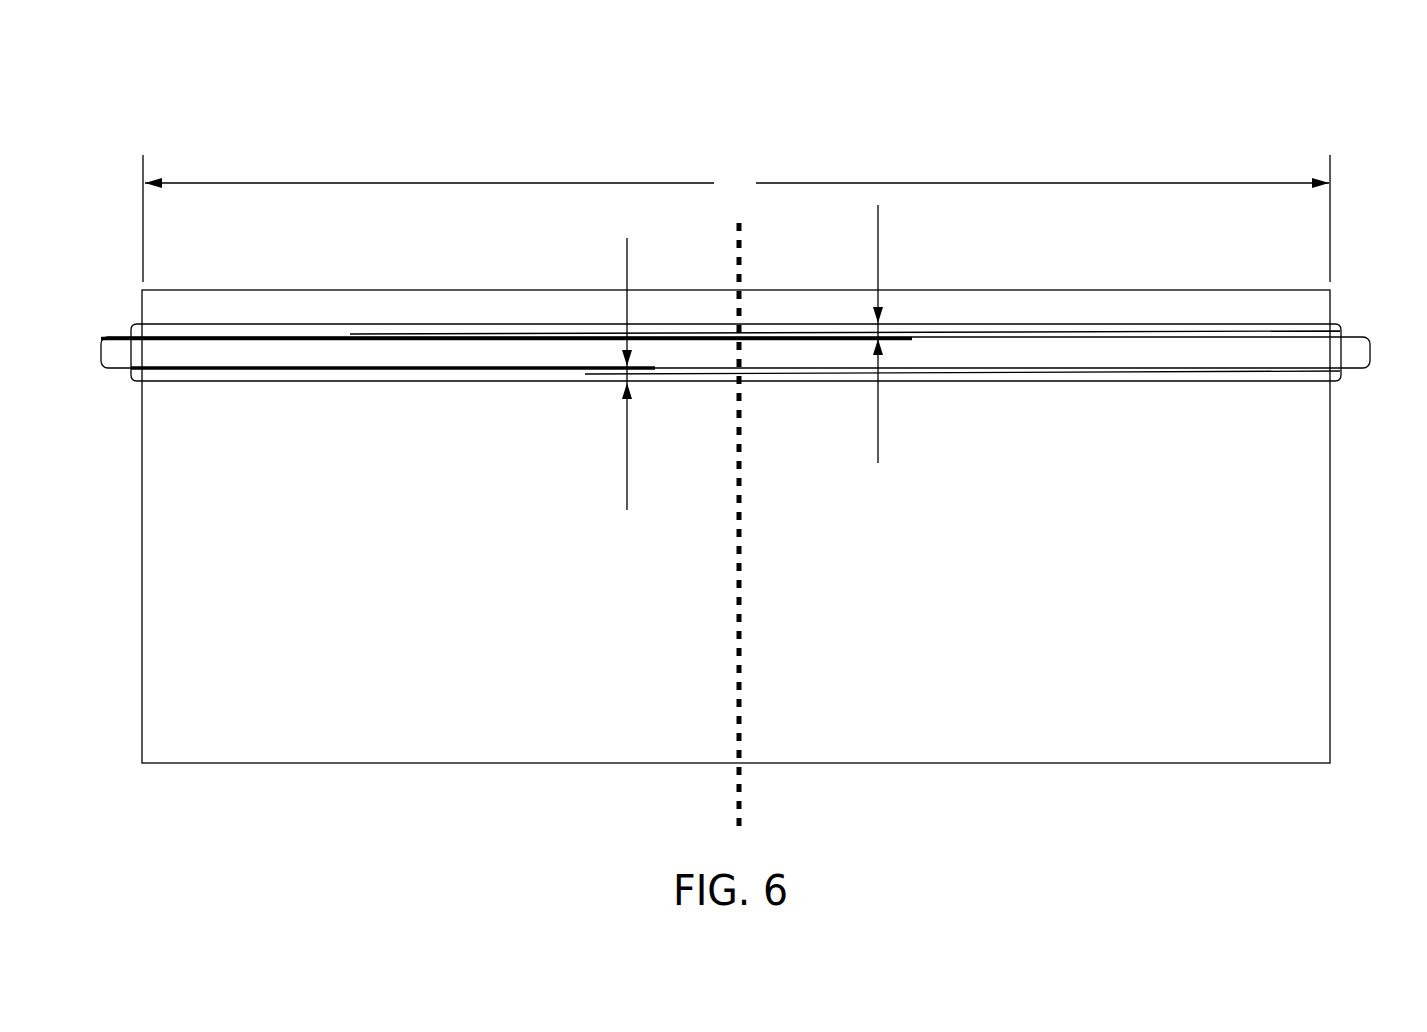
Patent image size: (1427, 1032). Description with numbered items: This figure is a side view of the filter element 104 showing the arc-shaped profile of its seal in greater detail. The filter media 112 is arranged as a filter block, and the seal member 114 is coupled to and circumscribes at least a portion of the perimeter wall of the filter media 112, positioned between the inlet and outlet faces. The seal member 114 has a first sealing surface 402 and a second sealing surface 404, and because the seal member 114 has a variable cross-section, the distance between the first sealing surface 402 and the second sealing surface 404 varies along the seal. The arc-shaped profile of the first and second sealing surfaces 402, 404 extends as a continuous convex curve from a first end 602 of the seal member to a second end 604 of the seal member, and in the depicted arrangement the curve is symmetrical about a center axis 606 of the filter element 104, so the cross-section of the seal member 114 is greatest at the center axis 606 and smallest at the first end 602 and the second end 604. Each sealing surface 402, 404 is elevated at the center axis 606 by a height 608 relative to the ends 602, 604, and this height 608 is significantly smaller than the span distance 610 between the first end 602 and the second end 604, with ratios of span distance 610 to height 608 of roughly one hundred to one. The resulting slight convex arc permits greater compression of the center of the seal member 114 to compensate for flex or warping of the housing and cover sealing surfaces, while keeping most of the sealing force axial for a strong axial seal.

The filter element 104 is at (290, 128).
The filter media 112 is at (1080, 748).
The seal member 114 is at (353, 350).
The first sealing surface 402 is at (1070, 333).
The second sealing surface 404 is at (1073, 372).
The first end 602 is at (129, 330).
The second end 604 is at (1349, 331).
The center axis 606 is at (740, 785).
The height 608 is at (622, 470).
The span distance 610 is at (736, 218).